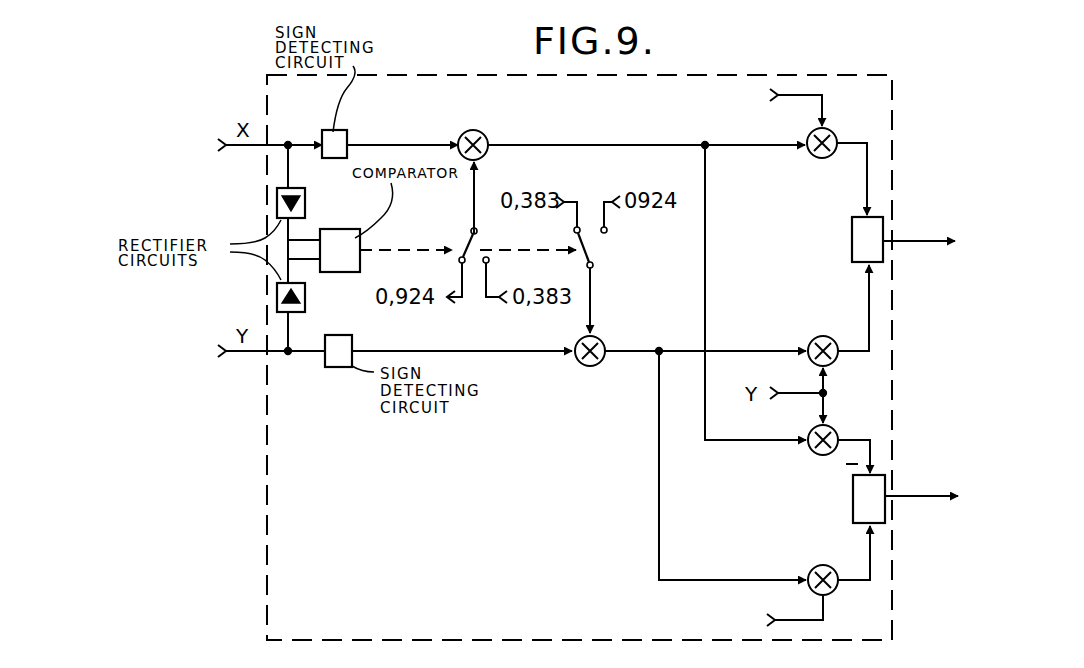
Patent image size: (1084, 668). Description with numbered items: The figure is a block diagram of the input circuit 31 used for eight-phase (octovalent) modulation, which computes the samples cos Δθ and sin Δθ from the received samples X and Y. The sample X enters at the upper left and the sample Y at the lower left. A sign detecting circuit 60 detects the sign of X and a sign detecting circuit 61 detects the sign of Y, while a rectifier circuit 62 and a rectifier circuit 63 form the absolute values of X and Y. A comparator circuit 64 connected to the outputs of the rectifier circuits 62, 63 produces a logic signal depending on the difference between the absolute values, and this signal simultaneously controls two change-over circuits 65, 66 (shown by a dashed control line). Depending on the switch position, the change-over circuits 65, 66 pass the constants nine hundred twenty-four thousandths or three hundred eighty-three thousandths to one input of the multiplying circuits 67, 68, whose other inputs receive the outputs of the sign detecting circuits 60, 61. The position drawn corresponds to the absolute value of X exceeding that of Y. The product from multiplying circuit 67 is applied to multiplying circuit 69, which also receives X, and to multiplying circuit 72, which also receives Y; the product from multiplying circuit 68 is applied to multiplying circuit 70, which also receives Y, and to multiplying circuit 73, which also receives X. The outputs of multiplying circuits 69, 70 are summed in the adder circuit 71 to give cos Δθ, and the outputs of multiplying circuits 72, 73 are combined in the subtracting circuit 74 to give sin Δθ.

The input circuit 31 is at (892, 402).
The sign detecting circuit 60 is at (336, 130).
The sign detecting circuit 61 is at (335, 369).
The rectifier circuit 62 is at (306, 207).
The rectifier circuit 63 is at (306, 300).
The comparator circuit 64 is at (342, 233).
The change-over circuit 65 is at (462, 246).
The change-over circuit 66 is at (600, 256).
The multiplying circuit 67 is at (484, 132).
The multiplying circuit 68 is at (583, 366).
The multiplying circuit 69 is at (833, 135).
The multiplying circuit 70 is at (812, 338).
The adder circuit 71 is at (852, 243).
The multiplying circuit 72 is at (812, 454).
The multiplying circuit 73 is at (810, 569).
The subtracting circuit 74 is at (846, 514).